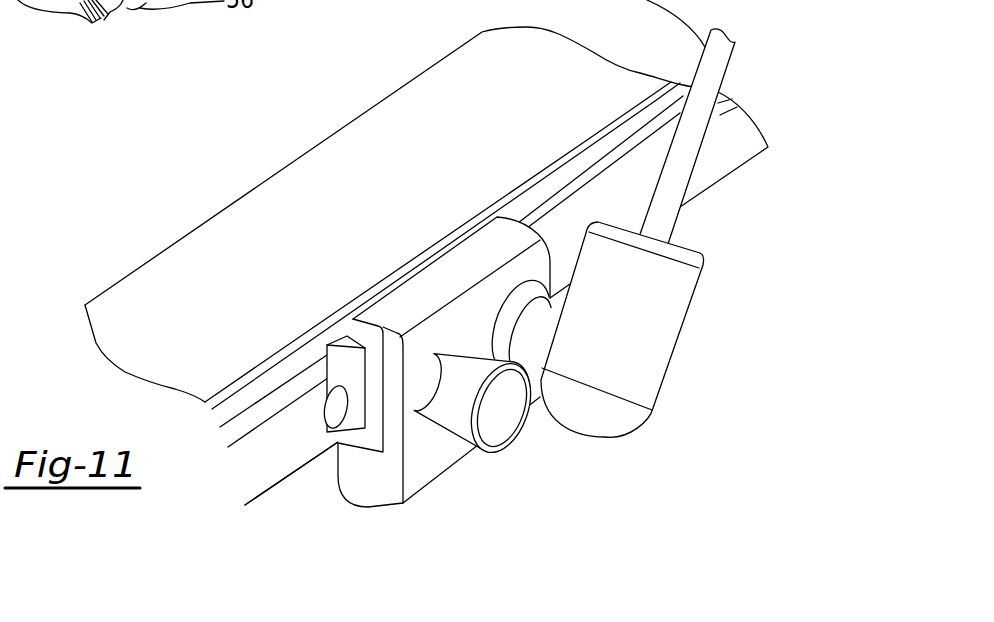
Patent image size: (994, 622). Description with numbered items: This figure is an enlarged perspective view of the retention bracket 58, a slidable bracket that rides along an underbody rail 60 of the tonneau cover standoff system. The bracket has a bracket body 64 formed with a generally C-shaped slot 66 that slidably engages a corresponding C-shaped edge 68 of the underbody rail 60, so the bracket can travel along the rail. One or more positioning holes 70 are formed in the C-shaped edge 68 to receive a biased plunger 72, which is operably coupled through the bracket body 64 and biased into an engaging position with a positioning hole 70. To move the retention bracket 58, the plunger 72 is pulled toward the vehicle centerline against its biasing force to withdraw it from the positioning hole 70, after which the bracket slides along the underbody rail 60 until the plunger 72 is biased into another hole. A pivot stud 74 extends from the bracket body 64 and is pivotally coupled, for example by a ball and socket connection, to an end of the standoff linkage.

The retention bracket 58 is at (496, 288).
The underbody rail 60 is at (187, 262).
The bracket body 64 is at (375, 488).
The C-shaped slot 66 is at (354, 330).
The C-shaped edge 68 is at (255, 463).
The positioning hole 70 is at (324, 400).
The biased plunger 72 is at (500, 430).
The pivot stud 74 is at (537, 340).